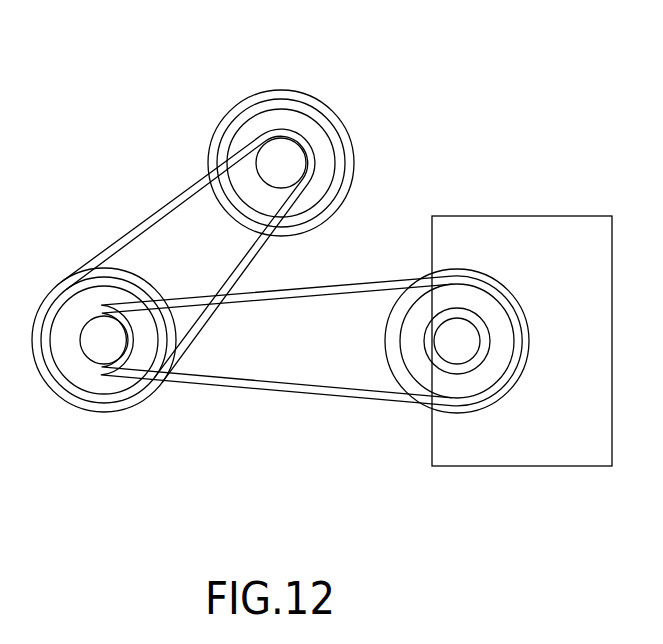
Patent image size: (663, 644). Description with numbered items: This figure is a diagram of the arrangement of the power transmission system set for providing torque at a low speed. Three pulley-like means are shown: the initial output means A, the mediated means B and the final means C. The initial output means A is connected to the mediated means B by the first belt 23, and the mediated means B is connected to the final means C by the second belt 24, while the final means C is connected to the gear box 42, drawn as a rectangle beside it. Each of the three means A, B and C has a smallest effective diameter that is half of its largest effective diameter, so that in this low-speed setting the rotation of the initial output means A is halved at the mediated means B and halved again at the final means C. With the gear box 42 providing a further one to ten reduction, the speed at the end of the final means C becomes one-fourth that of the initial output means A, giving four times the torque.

The initial output means A is at (290, 82).
The mediated means B is at (62, 283).
The final means C is at (452, 413).
The first belt 23 is at (162, 220).
The second belt 24 is at (307, 288).
The gear box 42 is at (523, 227).